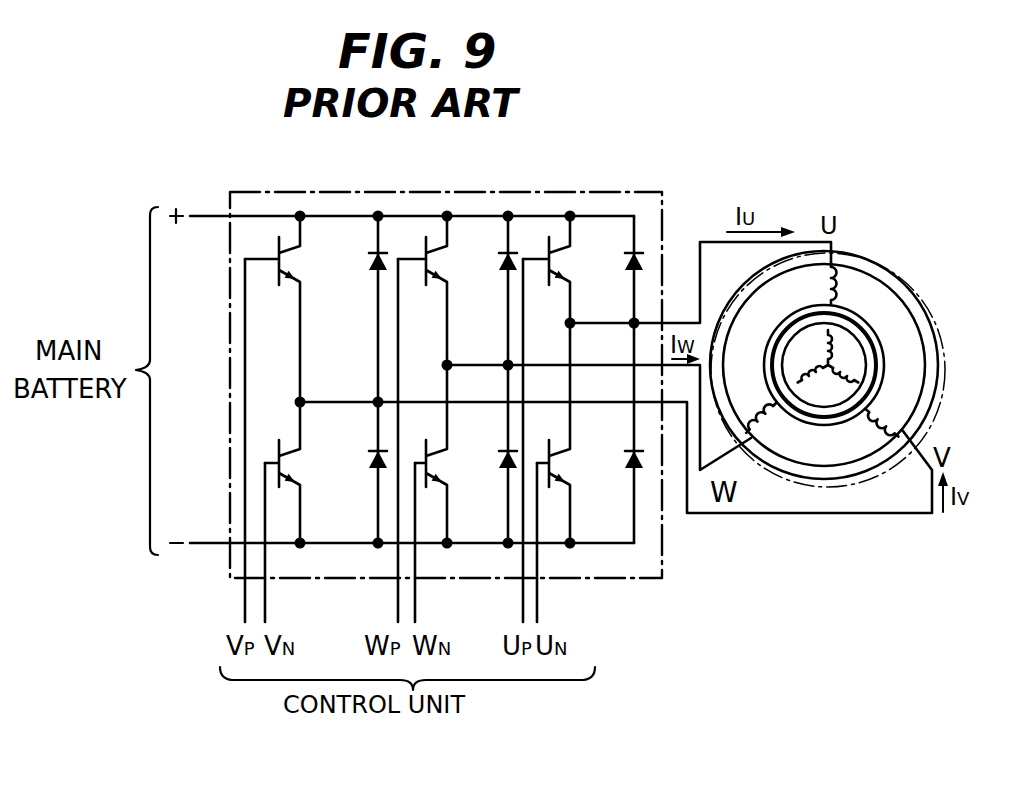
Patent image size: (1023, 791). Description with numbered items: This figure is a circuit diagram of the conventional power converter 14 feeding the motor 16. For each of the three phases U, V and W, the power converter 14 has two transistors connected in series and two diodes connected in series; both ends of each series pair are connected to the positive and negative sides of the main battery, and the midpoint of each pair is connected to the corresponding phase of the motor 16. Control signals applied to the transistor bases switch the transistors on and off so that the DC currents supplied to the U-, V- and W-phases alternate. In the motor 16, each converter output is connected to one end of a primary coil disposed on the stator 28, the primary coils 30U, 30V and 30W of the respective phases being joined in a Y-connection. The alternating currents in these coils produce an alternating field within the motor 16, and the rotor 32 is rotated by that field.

The power converter 14 is at (425, 192).
The motor 16 is at (877, 260).
The stator 28 is at (928, 313).
The U-phase primary coil 30U is at (842, 283).
The V-phase primary coil 30V is at (897, 425).
The W-phase primary coil 30W is at (777, 418).
The rotor 32 is at (886, 356).